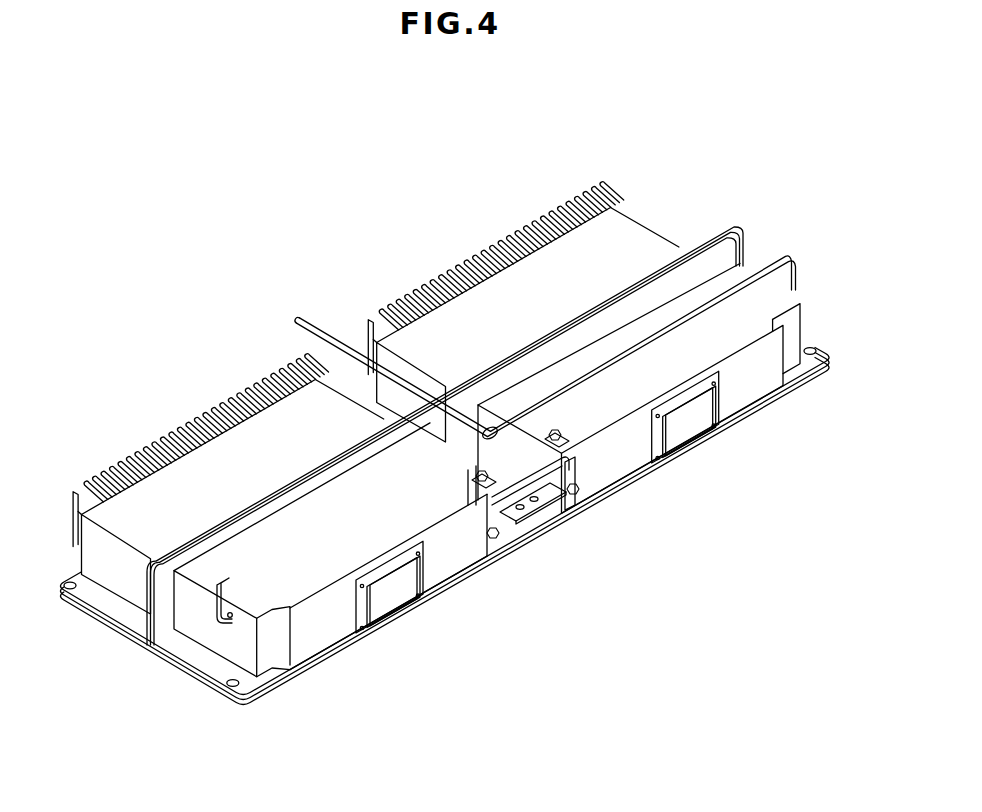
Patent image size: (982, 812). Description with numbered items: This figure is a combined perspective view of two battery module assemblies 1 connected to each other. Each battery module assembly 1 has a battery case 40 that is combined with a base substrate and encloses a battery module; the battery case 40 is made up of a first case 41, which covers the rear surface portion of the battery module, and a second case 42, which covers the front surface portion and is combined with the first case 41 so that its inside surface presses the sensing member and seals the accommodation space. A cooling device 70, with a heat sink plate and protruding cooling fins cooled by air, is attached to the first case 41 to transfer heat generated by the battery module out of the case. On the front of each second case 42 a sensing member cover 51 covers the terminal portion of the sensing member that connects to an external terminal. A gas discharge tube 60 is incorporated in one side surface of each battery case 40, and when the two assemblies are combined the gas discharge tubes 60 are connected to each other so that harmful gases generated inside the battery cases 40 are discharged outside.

The battery module assembly 1 is at (562, 122).
The battery case 40 is at (647, 140).
The first case 41 is at (643, 227).
The second case 42 is at (733, 275).
The sensing member cover 51 is at (688, 435).
The gas discharge tube 60 is at (794, 272).
The cooling device 70 is at (461, 249).